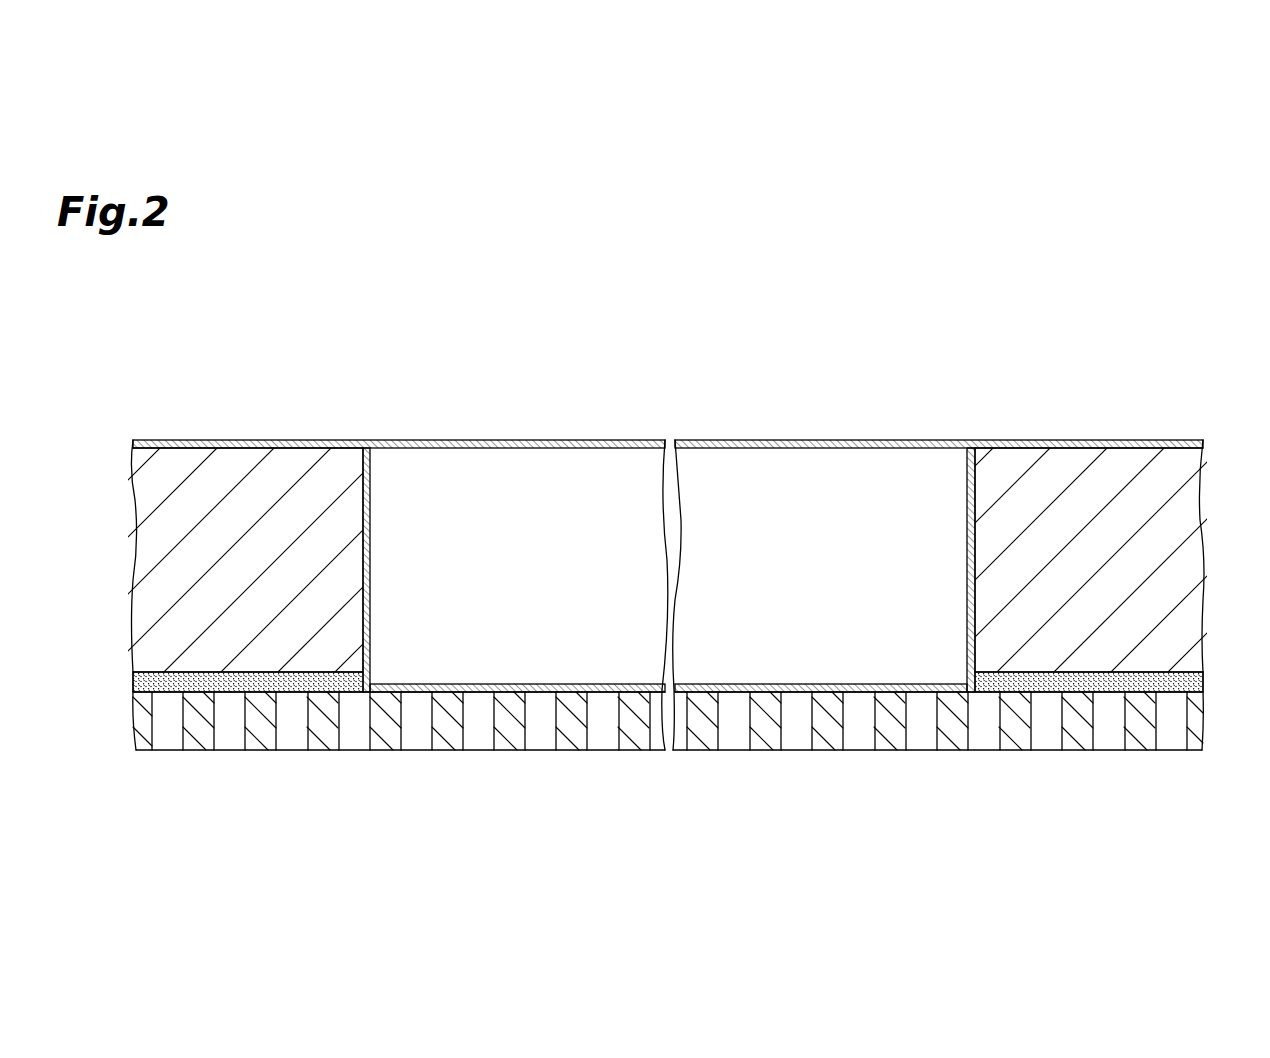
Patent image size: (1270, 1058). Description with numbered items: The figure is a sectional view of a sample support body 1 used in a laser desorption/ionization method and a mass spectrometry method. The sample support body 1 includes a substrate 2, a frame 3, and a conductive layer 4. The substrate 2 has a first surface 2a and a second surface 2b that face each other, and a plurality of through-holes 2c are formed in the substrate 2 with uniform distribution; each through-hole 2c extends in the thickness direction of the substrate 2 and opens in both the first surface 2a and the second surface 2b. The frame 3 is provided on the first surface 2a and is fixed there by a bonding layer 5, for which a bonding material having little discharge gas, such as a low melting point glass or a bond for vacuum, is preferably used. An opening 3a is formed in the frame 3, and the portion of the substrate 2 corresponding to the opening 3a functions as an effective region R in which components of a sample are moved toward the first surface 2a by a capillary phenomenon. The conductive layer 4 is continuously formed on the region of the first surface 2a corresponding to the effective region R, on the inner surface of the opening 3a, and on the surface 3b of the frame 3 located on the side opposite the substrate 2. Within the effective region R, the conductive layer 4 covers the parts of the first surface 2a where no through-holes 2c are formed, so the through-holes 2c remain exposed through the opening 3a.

The sample support body 1 is at (993, 351).
The substrate 2 is at (1198, 718).
The first surface 2a is at (1204, 680).
The second surface 2b is at (1192, 752).
The through-holes 2c is at (227, 730).
The frame 3 is at (1200, 557).
The opening 3a is at (368, 507).
The surface of the frame 3b is at (1177, 442).
The conductive layer 4 is at (517, 684).
The bonding layer 5 is at (134, 682).
The effective region R is at (734, 683).